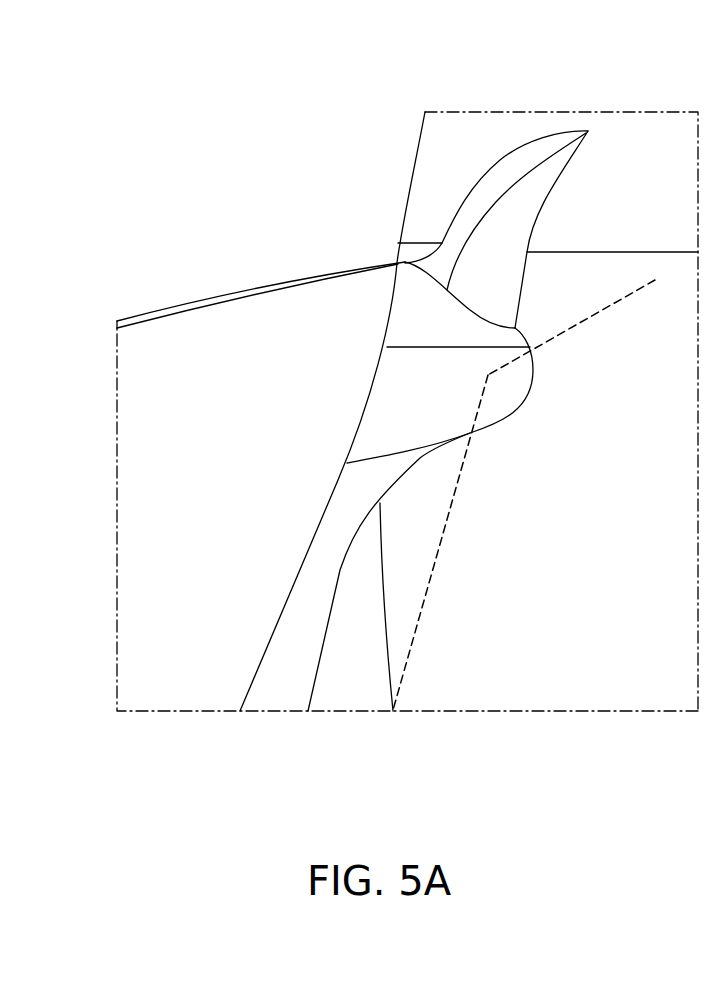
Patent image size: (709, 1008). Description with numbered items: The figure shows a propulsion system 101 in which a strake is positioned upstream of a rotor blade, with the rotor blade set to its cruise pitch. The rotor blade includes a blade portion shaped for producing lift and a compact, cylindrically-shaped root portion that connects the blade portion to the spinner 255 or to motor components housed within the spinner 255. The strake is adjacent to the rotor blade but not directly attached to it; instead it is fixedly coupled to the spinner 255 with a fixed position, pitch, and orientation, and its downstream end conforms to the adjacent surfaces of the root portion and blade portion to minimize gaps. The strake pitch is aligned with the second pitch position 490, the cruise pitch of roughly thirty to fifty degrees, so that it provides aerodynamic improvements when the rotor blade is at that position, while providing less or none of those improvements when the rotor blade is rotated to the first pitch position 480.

The spinner 255 is at (507, 120).
The propulsion system 101 is at (590, 704).
The first pitch position 480 is at (563, 332).
The second pitch position 490 is at (425, 588).